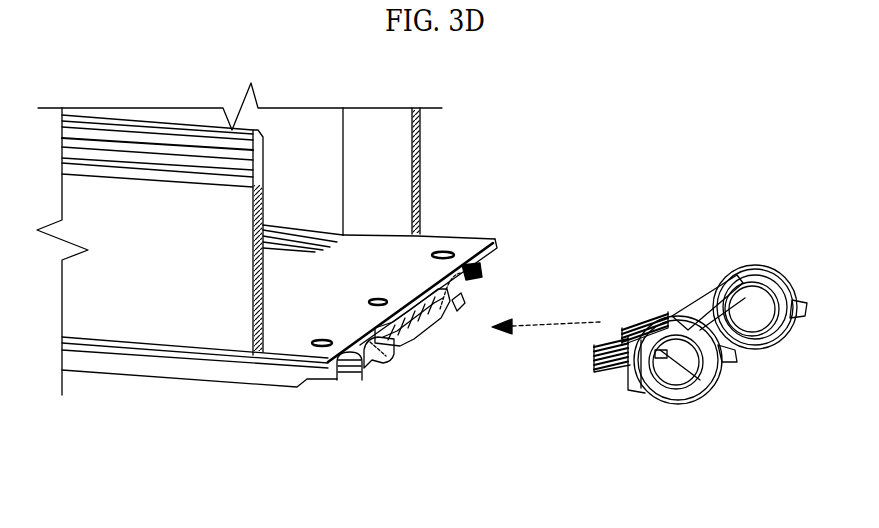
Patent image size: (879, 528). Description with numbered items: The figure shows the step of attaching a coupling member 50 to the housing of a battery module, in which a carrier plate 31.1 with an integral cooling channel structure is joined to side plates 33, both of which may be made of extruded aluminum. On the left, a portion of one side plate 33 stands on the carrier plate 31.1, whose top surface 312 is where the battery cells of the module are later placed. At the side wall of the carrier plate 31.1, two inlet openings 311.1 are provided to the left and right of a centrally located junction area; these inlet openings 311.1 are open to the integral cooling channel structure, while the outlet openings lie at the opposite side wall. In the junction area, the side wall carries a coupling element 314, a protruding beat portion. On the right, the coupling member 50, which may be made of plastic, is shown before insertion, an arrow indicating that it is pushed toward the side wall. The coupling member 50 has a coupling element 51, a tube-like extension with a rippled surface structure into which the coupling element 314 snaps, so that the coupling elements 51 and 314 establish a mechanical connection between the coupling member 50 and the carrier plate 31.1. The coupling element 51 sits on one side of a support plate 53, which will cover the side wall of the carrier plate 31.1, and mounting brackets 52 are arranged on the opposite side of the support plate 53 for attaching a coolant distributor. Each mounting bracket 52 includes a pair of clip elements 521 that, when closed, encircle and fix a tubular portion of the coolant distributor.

The side plate 33 is at (160, 277).
The carrier plate 31.1 is at (342, 302).
The top surface 312 is at (298, 325).
The inlet opening 311.1 is at (362, 350).
The coupling element 314 is at (407, 323).
The coupling member 50 is at (740, 258).
The coupling element 51 is at (651, 283).
The mounting bracket 52 is at (693, 425).
The support plate 53 is at (697, 283).
The clip element 521 is at (793, 333).